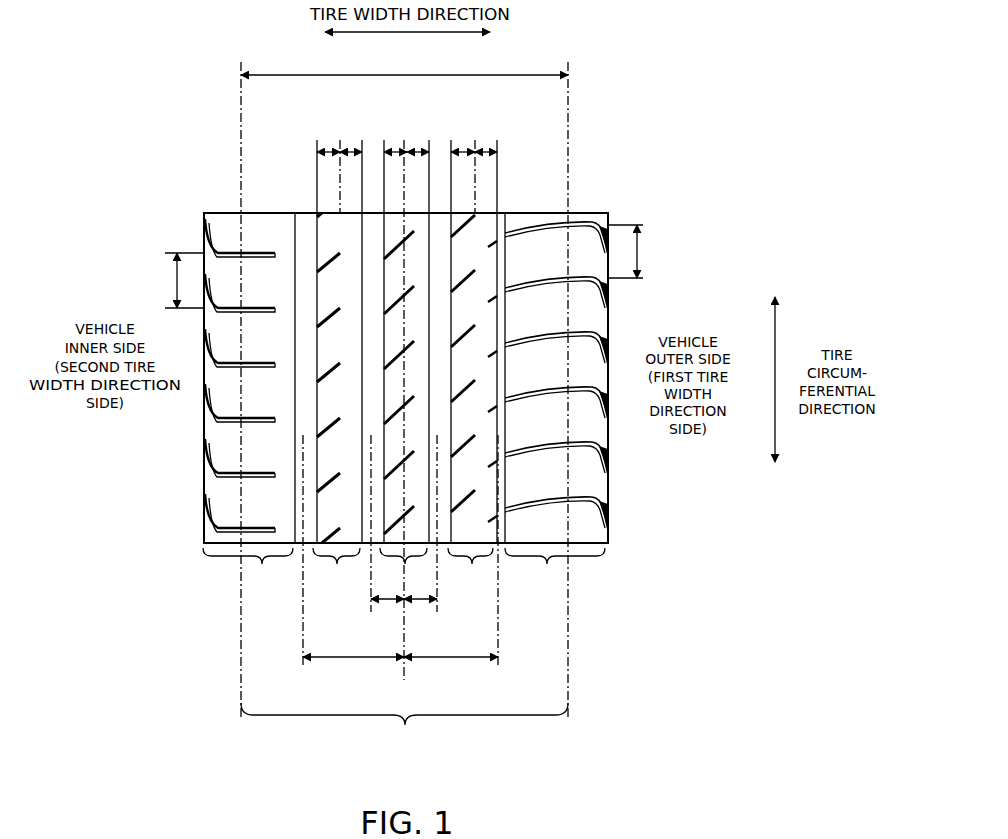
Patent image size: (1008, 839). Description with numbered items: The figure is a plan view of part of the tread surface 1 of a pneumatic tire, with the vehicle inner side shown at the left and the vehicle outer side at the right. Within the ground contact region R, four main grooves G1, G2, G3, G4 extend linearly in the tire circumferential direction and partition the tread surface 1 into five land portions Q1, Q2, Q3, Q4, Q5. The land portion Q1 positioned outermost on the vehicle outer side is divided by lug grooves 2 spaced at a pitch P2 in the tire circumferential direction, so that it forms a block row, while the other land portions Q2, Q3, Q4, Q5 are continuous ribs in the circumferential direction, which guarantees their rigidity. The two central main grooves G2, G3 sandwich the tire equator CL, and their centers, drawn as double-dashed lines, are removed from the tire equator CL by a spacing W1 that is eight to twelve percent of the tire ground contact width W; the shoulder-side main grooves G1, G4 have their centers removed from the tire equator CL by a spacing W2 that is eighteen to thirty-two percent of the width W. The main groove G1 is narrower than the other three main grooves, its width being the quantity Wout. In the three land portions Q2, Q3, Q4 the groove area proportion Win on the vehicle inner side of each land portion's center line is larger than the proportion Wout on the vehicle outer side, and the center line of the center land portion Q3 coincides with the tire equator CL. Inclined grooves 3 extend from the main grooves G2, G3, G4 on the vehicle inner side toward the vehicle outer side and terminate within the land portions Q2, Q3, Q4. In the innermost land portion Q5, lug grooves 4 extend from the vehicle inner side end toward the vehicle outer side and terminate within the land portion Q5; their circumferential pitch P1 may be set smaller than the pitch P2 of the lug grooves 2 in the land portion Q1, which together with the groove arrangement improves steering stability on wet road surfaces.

The tread surface 1 is at (592, 145).
The lug grooves 2 is at (583, 215).
The inclined grooves 3 is at (334, 259).
The lug grooves 4 is at (232, 258).
The main groove G1 is at (503, 311).
The main groove G2 is at (440, 311).
The main groove G3 is at (374, 289).
The main groove G4 is at (307, 289).
The pitch spacing P1 is at (174, 280).
The pitch spacing P2 is at (637, 251).
The tire ground contact width W is at (404, 63).
The vehicle inner side groove area proportion Win is at (329, 146).
The vehicle outer side groove area proportion Wout is at (349, 148).
The land portion Q1 is at (555, 568).
The land portion Q2 is at (470, 568).
The land portion Q3 is at (406, 568).
The land portion Q4 is at (336, 568).
The land portion Q5 is at (248, 568).
The spacing W1 is at (387, 602).
The spacing W2 is at (353, 660).
The tire equator CL is at (403, 414).
The ground contact region R is at (404, 728).